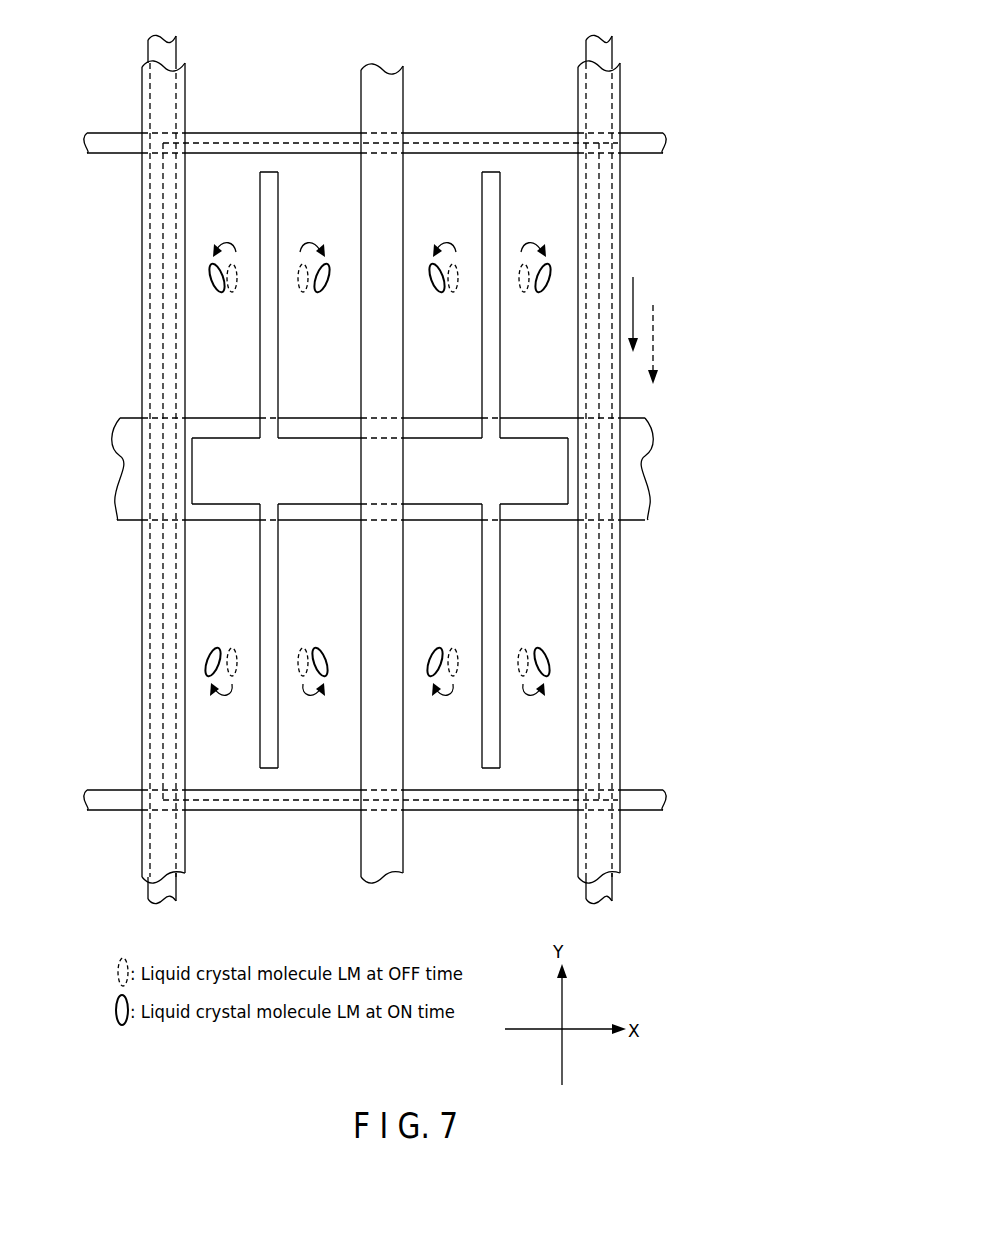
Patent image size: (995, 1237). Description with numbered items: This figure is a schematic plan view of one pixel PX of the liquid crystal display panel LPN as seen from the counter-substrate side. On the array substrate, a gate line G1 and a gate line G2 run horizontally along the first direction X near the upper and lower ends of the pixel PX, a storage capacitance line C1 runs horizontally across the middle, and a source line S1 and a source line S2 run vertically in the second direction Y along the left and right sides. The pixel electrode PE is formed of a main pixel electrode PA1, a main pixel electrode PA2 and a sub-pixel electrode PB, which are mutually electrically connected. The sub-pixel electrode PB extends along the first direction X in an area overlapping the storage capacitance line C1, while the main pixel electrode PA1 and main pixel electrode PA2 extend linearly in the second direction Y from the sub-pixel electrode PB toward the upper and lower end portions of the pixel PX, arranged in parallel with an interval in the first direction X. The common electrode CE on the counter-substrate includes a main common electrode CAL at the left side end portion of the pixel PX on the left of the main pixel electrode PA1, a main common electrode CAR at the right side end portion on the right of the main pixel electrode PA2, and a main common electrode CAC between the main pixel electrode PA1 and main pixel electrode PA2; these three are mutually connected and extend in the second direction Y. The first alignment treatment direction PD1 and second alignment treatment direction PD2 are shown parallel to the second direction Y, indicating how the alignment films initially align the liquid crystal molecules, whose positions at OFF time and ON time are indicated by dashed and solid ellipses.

The source line S1 is at (160, 50).
The source line S2 is at (595, 50).
The gate line G1 is at (87, 145).
The gate line G2 is at (87, 800).
The storage capacitance line C1 is at (115, 476).
The liquid crystal display panel LPN is at (657, 72).
The pixel PX is at (606, 141).
The pixel electrode PE is at (431, 470).
The main pixel electrode PA1 is at (260, 366).
The main pixel electrode PA2 is at (482, 366).
The sub-pixel electrode PB is at (525, 446).
The main common electrode CAL is at (142, 707).
The main common electrode CAC is at (404, 553).
The main common electrode CAR is at (620, 580).
The common electrode CE is at (192, 863).
The first alignment treatment direction PD1 is at (633, 288).
The second alignment treatment direction PD2 is at (653, 320).